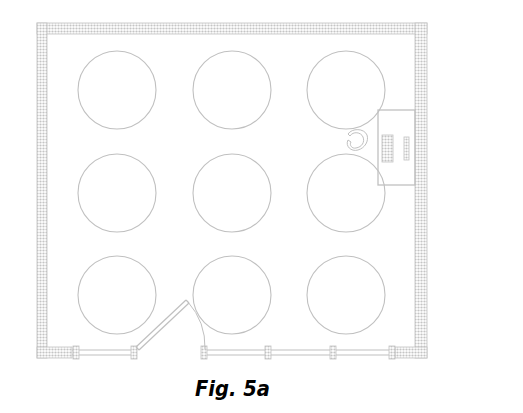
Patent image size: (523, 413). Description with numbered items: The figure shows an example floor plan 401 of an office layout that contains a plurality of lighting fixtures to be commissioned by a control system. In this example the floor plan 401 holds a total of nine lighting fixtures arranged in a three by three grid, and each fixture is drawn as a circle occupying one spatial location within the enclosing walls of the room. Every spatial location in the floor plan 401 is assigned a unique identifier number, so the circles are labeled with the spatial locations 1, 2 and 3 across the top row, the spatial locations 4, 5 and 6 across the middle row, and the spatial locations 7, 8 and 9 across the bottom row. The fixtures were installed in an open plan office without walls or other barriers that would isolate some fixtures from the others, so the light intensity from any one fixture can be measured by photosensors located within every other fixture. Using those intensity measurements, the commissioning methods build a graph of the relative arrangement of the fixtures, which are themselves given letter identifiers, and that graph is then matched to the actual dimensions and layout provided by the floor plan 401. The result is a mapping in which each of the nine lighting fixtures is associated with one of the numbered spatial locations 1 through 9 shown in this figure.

The floor plan 401 is at (425, 265).
The spatial location identifier 1 is at (117, 90).
The spatial location identifier 2 is at (232, 90).
The spatial location identifier 3 is at (346, 90).
The spatial location identifier 4 is at (117, 193).
The spatial location identifier 5 is at (232, 193).
The spatial location identifier 6 is at (346, 193).
The spatial location identifier 7 is at (117, 295).
The spatial location identifier 8 is at (232, 295).
The spatial location identifier 9 is at (346, 295).